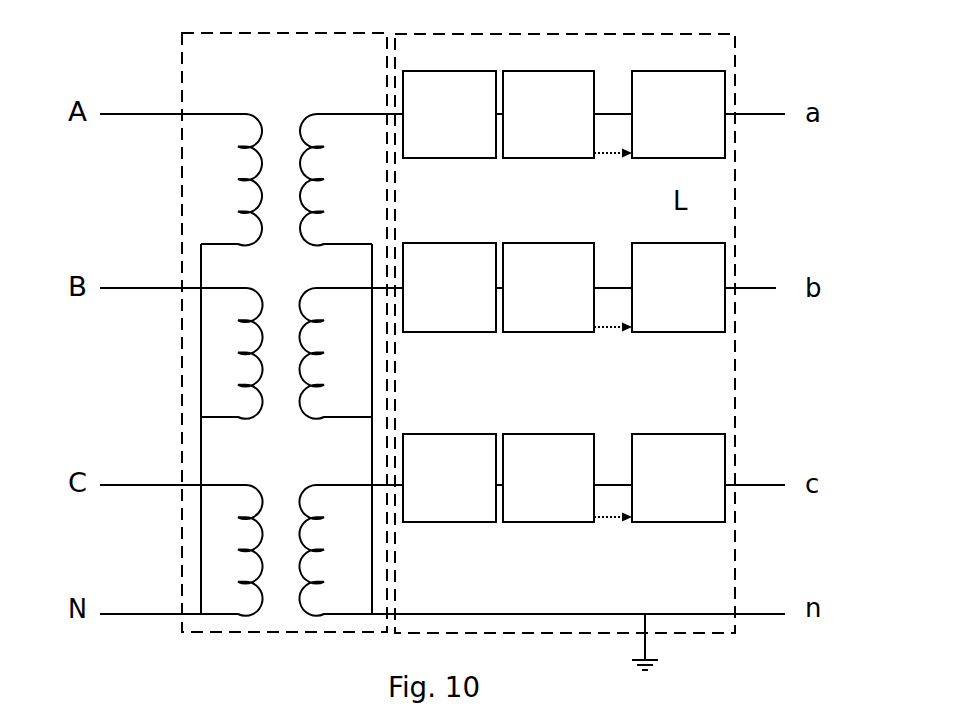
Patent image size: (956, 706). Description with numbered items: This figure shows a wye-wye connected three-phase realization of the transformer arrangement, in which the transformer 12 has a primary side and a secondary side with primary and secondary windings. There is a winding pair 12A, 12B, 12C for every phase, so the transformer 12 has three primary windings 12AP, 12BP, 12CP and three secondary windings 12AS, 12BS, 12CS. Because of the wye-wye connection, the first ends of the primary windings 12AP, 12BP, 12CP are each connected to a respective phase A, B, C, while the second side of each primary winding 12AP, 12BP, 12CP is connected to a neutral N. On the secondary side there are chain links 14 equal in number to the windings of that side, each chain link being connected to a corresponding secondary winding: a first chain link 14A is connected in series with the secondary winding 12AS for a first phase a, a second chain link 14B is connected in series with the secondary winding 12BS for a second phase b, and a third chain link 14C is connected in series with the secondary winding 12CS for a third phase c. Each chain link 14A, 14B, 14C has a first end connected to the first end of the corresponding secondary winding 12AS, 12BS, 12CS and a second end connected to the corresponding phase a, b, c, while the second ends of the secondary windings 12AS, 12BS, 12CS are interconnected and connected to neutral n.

The transformer 12 is at (181, 92).
The winding pair 12A is at (299, 108).
The primary winding 12AP is at (223, 179).
The secondary winding 12AS is at (339, 179).
The winding pair 12B is at (313, 276).
The primary winding 12BP is at (226, 353).
The secondary winding 12BS is at (336, 353).
The winding pair 12C is at (314, 483).
The primary winding 12CP is at (222, 550).
The secondary winding 12CS is at (337, 550).
The chain links 14 is at (738, 73).
The first chain link 14A is at (564, 197).
The second chain link 14B is at (573, 371).
The third chain link 14C is at (589, 554).